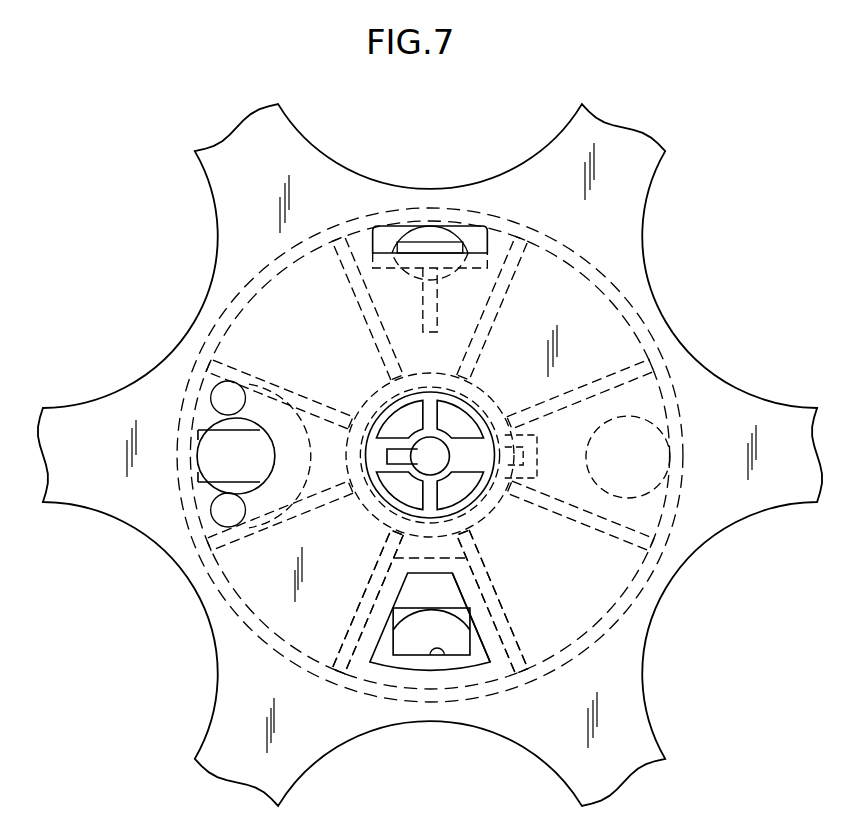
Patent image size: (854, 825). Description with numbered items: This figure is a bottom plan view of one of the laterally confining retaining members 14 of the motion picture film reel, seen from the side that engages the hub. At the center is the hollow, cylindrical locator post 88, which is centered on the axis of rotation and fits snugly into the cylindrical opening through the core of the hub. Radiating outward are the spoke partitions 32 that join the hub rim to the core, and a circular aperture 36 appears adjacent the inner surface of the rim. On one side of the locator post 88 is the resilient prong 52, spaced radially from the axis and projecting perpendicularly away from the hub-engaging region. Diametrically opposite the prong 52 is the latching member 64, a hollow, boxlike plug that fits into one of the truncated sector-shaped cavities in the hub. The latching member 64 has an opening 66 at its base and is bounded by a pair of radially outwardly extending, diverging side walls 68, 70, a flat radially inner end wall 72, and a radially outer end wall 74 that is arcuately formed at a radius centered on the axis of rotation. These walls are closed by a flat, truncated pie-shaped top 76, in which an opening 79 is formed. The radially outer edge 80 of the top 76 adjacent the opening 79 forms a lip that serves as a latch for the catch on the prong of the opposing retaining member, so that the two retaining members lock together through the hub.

The retaining member 14 is at (661, 703).
The spoke partition 32 is at (603, 393).
The circular aperture 36 is at (630, 496).
The resilient prong 52 is at (431, 224).
The latching member 64 is at (491, 606).
The opening 66 is at (407, 588).
The side wall 68 is at (365, 630).
The side wall 70 is at (498, 637).
The radial inner end wall 72 is at (438, 558).
The radial outer end wall 74 is at (480, 685).
The top 76 is at (428, 594).
The opening 79 is at (437, 656).
The radially outer edge 80 is at (425, 661).
The locator post 88 is at (476, 395).